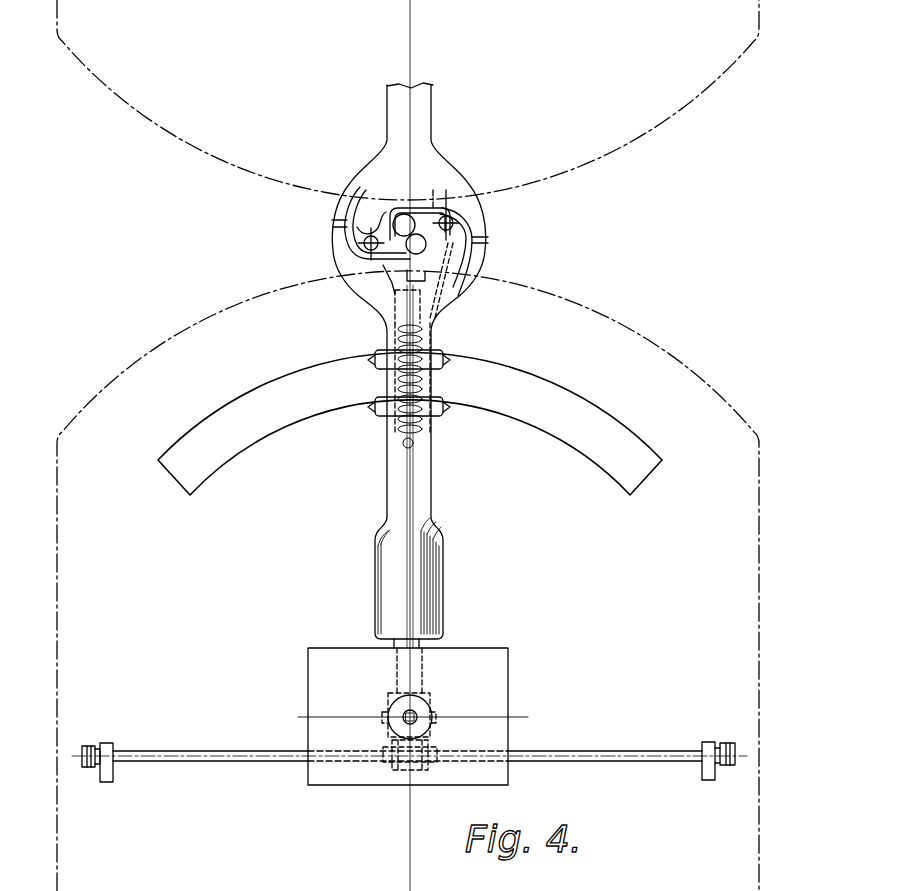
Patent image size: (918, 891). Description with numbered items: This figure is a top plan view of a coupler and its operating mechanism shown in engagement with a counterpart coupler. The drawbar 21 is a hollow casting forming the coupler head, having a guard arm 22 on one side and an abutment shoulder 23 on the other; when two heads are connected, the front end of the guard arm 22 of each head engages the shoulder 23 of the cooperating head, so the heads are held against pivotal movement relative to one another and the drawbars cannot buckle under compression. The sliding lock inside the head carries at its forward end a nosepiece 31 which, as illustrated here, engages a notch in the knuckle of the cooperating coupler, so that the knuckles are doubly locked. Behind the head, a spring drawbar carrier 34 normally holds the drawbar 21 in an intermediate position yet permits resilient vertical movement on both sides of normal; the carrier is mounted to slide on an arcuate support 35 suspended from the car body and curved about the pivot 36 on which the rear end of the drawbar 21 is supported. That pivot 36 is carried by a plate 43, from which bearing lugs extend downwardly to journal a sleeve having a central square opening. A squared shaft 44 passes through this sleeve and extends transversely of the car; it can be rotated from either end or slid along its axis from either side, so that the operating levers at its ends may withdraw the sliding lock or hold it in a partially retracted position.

The drawbar 21 is at (424, 105).
The guard arm 22 is at (340, 243).
The abutment shoulder 23 is at (345, 200).
The nosepiece 31 is at (432, 289).
The spring drawbar carrier 34 is at (438, 352).
The arcuate support 35 is at (556, 398).
The pivot 36 is at (414, 714).
The plate 43 is at (497, 672).
The squared shaft 44 is at (573, 752).